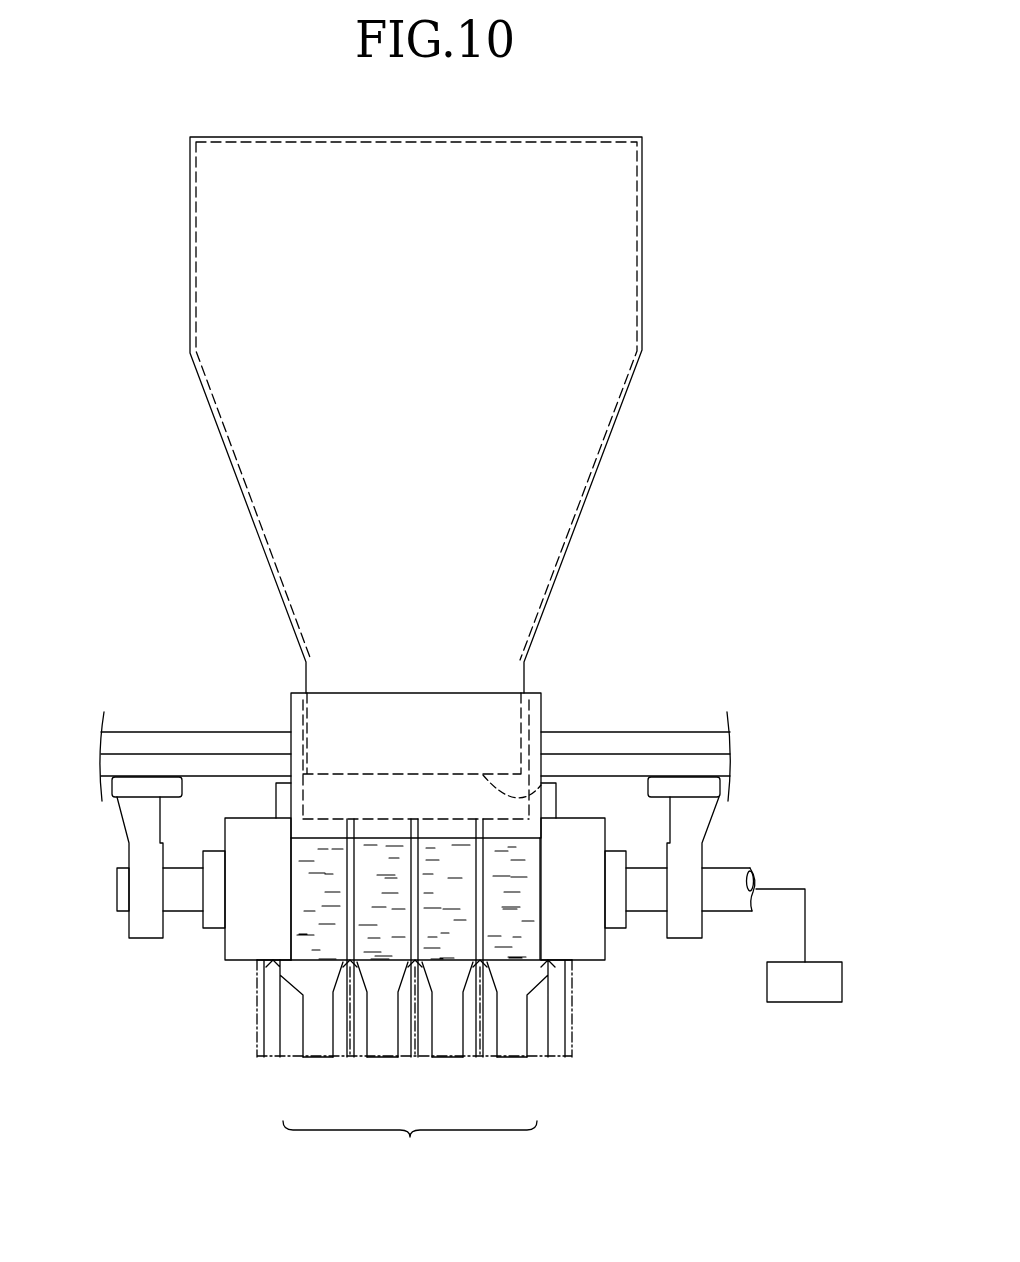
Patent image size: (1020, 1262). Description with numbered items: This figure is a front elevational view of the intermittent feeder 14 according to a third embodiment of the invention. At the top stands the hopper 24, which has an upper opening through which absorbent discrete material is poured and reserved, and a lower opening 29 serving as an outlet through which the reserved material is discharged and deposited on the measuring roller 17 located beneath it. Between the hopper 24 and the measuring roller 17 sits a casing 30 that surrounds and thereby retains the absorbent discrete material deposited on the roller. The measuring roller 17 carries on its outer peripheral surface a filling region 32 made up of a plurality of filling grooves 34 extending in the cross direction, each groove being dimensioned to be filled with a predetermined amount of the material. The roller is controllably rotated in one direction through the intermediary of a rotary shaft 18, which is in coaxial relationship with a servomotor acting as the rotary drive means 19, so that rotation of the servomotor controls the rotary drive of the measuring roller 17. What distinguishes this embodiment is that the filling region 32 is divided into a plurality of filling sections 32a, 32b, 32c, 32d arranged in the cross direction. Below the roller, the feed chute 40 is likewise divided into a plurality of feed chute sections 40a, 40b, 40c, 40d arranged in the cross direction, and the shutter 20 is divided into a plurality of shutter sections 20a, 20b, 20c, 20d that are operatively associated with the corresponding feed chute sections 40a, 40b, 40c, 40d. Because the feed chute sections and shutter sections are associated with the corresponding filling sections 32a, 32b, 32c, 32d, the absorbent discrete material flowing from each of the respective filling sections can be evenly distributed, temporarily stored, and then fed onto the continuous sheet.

The feeder 14 is at (679, 177).
The hopper 24 is at (595, 403).
The casing 30 is at (535, 693).
The lower opening 29 is at (543, 787).
The filling region 32 is at (158, 600).
The filling section 32a is at (321, 857).
The filling section 32b is at (378, 857).
The filling section 32c is at (446, 857).
The filling section 32d is at (500, 857).
The filling grooves 34 is at (312, 902).
The measuring roller 17 is at (592, 946).
The rotary shaft 18 is at (728, 881).
The rotary drive means 19 is at (822, 960).
The feed chute 40 is at (158, 952).
The feed chute section 40a is at (313, 975).
The feed chute section 40b is at (383, 995).
The feed chute section 40c is at (448, 1007).
The feed chute section 40d is at (508, 1025).
The shutter 20 is at (410, 1142).
The shutter section 20a is at (307, 1057).
The shutter section 20b is at (376, 1057).
The shutter section 20c is at (442, 1057).
The shutter section 20d is at (503, 1057).